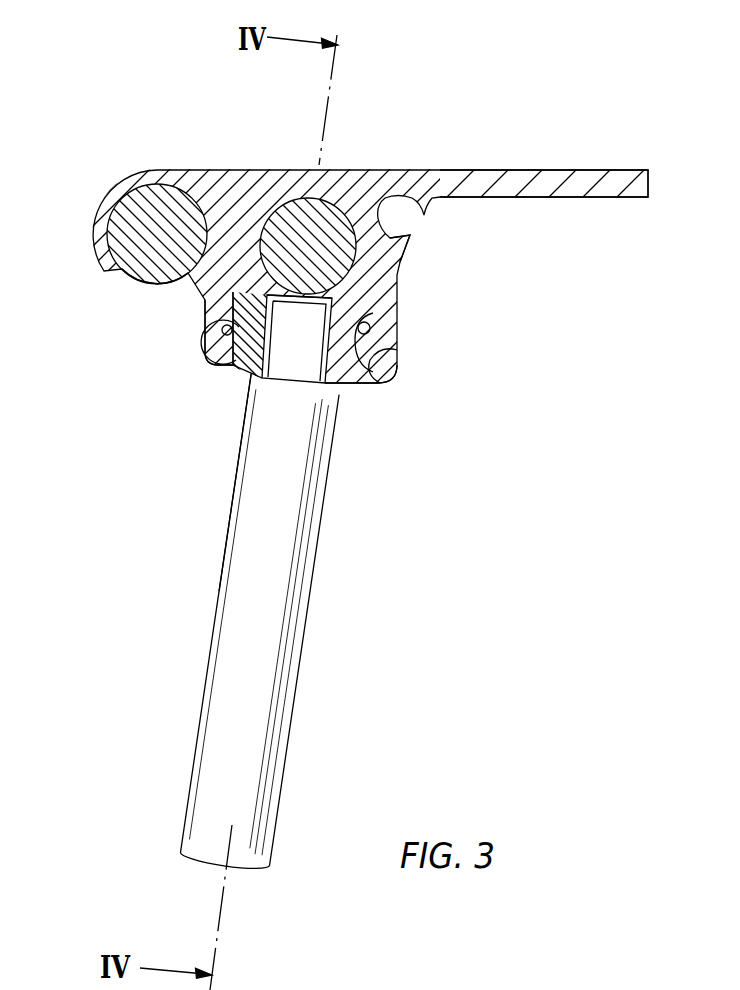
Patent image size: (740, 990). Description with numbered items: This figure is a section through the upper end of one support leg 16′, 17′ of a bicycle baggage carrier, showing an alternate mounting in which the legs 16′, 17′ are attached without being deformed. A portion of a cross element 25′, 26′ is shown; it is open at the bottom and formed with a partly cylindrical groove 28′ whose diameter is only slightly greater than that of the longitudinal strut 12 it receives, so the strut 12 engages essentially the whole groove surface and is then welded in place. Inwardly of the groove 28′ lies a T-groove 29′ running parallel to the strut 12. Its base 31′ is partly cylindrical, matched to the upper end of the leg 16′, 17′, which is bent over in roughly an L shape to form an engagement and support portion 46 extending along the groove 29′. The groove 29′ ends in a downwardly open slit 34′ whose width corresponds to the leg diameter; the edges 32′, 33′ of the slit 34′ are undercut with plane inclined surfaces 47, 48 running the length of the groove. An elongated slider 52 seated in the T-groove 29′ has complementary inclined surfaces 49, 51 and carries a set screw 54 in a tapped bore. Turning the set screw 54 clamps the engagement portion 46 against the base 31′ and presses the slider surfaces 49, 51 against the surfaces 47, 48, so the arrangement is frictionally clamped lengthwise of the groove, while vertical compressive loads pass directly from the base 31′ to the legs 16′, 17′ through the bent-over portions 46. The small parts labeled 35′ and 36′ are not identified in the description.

The longitudinal strut 12 is at (150, 287).
The support leg 16′ is at (295, 622).
The support leg 17′ is at (259, 622).
The cross element 25′ is at (544, 139).
The cross element 26′ is at (534, 170).
The partly cylindrical groove 28′ is at (110, 251).
The groove 29′ is at (377, 293).
The base of the groove 31′ is at (332, 171).
The edge of the slit 32′ is at (367, 388).
The edge of the slit 33′ is at (228, 348).
The slit 34′ is at (348, 396).
The collar 35′ is at (237, 308).
The retaining clip 36′ is at (373, 313).
The engagement and support portion 46 is at (290, 212).
The inclined surface 47 is at (387, 376).
The inclined surface 48 is at (213, 370).
The inclined surface of the slider 49 is at (203, 327).
The inclined surface of the slider 51 is at (397, 347).
The T-groove slider 52 is at (248, 378).
The set screw 54 is at (297, 357).